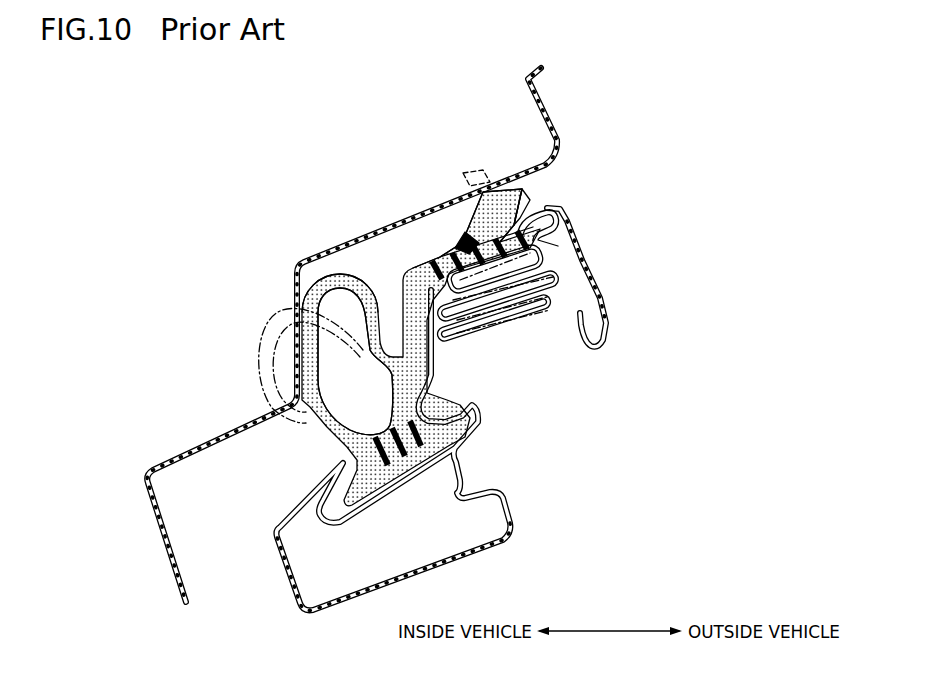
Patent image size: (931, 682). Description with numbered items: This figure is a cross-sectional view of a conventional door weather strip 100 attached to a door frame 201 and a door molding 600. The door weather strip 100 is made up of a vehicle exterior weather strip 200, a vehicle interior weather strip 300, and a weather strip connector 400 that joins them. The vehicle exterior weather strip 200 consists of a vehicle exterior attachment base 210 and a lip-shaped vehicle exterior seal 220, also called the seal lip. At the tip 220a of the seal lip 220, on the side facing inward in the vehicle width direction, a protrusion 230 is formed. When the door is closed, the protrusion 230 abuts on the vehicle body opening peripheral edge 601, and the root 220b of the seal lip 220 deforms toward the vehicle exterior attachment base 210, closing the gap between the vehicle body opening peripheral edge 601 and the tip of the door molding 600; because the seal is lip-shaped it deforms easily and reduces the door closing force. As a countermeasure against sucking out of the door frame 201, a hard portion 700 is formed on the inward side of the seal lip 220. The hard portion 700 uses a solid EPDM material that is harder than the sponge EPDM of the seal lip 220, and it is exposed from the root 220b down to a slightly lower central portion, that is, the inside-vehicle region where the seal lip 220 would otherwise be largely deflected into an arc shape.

The door weather strip 100 is at (310, 262).
The vehicle exterior weather strip 200 is at (547, 211).
The door frame 201 is at (458, 564).
The vehicle exterior attachment base 210 is at (385, 222).
The vehicle exterior seal 220 is at (461, 228).
The tip 220a is at (523, 187).
The root 220b is at (427, 260).
The protrusion 230 is at (507, 187).
The vehicle interior weather strip 300 is at (303, 421).
The weather strip connector 400 is at (398, 310).
The door molding 600 is at (590, 273).
The vehicle body opening peripheral edge 601 is at (330, 258).
The hard portion 700 is at (457, 244).